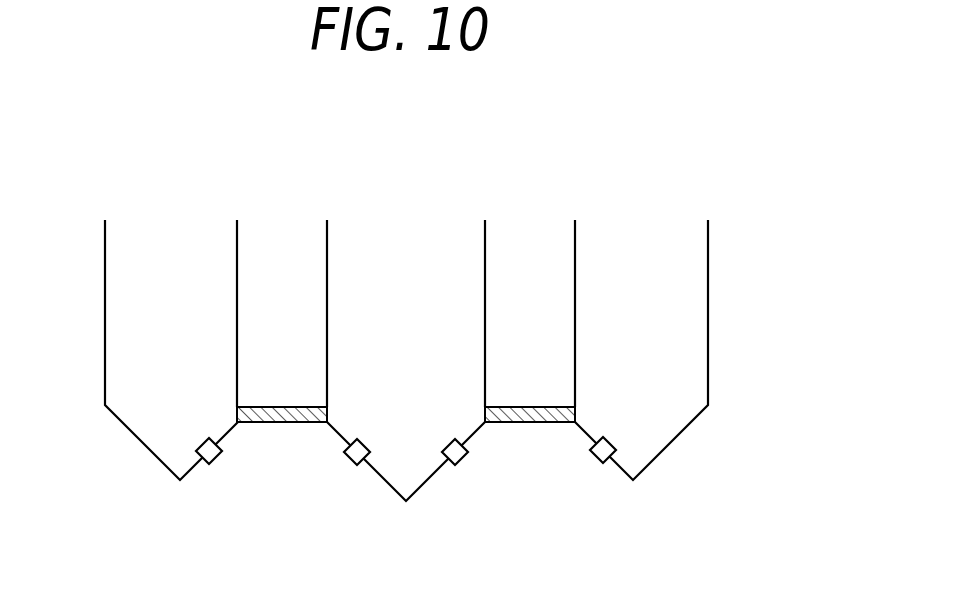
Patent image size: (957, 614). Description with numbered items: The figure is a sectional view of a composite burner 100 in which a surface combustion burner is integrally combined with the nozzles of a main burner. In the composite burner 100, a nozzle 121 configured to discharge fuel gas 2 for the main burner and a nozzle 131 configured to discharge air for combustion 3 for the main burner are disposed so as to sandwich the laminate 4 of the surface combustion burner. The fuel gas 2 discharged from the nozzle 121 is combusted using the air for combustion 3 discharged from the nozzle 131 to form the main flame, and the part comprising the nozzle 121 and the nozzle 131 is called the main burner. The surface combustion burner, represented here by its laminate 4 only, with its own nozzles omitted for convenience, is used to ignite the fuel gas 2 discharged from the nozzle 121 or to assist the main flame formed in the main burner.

The composite burner 100 is at (519, 150).
The fuel gas 2 is at (406, 232).
The air for combustion 3 is at (171, 232).
The laminate 4 is at (280, 423).
The nozzle 121 is at (357, 465).
The nozzle 131 is at (209, 464).